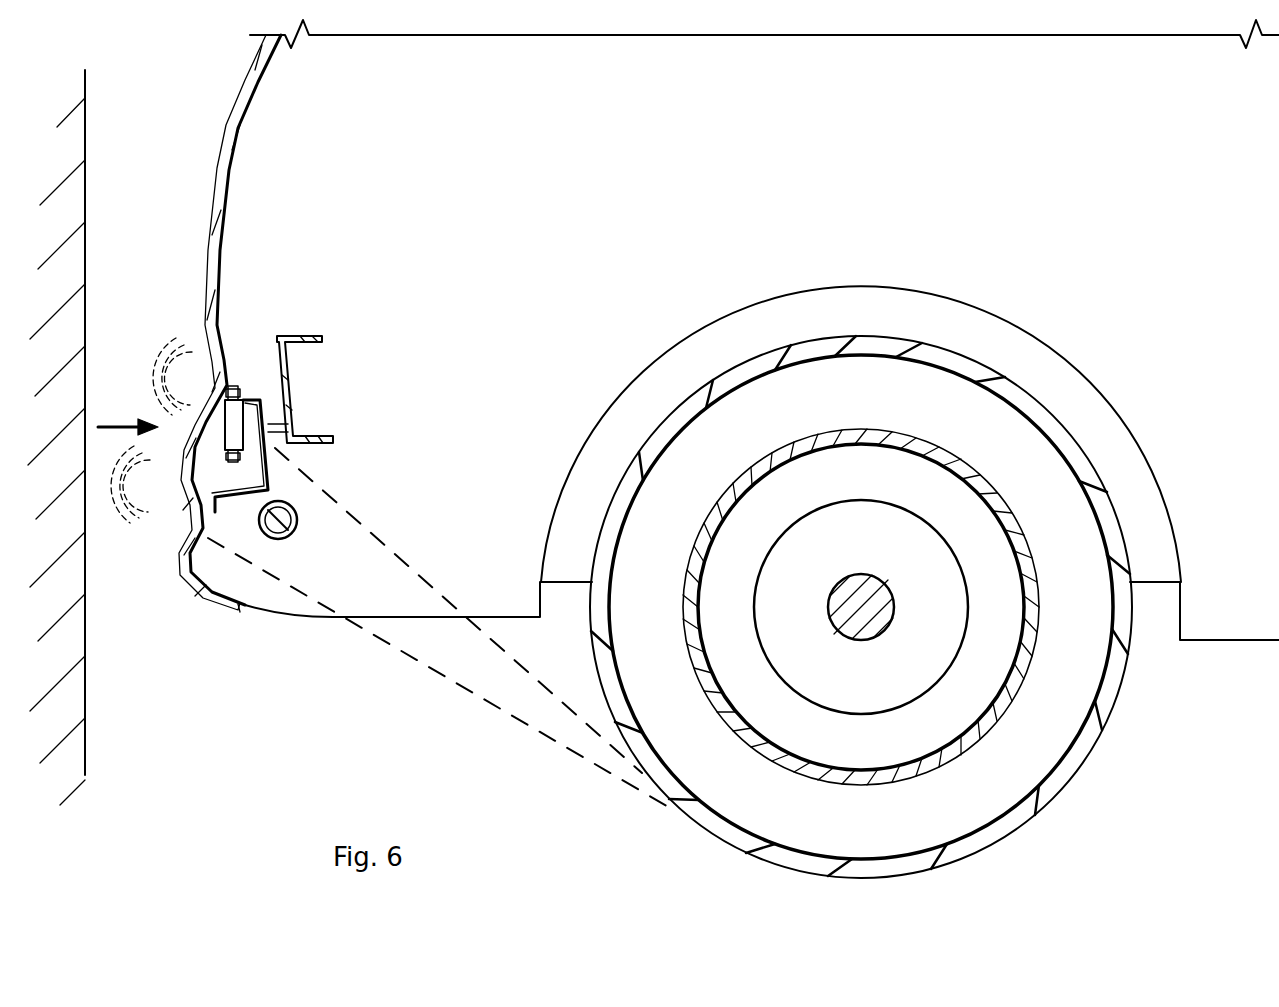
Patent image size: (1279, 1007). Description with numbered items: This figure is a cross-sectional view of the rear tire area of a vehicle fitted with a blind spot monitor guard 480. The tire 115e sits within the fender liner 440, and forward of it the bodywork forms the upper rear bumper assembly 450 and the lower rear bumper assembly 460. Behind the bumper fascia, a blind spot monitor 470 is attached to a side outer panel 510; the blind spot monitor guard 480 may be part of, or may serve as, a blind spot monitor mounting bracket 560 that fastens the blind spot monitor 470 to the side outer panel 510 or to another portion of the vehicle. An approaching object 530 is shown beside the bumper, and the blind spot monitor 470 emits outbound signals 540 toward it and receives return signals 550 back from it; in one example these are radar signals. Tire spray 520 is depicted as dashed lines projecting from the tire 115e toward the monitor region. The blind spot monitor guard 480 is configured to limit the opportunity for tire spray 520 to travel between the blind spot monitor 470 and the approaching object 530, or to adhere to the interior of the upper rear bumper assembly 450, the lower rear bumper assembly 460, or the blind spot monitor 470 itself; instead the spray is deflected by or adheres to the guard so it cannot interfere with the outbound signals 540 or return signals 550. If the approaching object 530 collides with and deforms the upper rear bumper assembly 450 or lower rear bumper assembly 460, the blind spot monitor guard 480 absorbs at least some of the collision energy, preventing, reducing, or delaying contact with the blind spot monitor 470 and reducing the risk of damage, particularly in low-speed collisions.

The approaching object 530 is at (85, 131).
The upper rear bumper assembly 450 is at (210, 196).
The outbound signals 540 is at (165, 365).
The return signals 550 is at (150, 510).
The blind spot monitor 470 is at (240, 423).
The blind spot monitor guard 480 is at (325, 453).
The blind spot monitor mounting bracket 560 is at (272, 428).
The side outer panel 510 is at (310, 337).
The lower rear bumper assembly 460 is at (218, 600).
The tire spray 520 is at (410, 652).
The fender liner 440 is at (900, 292).
The tire 115e is at (1110, 726).